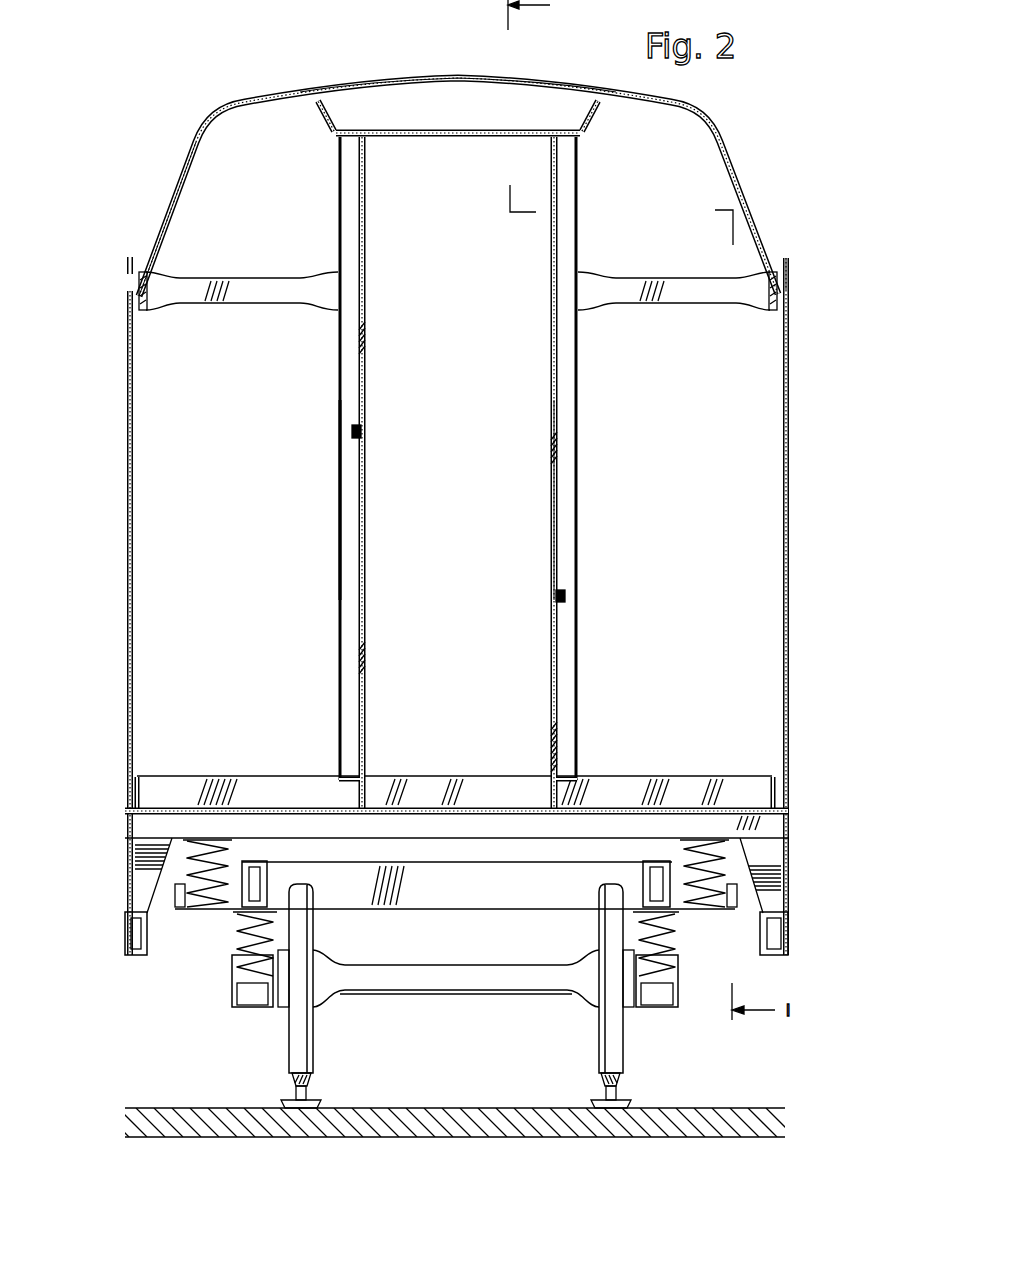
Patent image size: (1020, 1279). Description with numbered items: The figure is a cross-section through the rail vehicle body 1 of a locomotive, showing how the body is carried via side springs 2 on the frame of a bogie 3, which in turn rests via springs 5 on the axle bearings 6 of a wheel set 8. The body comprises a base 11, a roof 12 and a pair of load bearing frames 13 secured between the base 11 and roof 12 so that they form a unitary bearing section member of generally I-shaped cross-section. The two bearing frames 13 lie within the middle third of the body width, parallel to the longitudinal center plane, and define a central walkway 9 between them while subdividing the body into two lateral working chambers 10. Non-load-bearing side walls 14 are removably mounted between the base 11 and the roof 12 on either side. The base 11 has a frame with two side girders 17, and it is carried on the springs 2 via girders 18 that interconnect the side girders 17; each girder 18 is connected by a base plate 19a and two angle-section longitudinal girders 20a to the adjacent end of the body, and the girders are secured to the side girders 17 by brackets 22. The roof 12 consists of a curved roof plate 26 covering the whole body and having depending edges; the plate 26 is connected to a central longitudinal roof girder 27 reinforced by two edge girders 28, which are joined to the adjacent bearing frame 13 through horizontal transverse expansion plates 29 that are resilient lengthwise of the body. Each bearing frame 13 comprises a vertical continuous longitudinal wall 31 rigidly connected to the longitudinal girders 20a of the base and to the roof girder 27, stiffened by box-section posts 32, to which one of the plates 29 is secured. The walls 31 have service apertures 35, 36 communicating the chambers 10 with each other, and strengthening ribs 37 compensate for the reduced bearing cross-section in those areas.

The rail vehicle body 1 is at (356, 77).
The roof 12 is at (439, 76).
The roof plate 26 is at (484, 82).
The roof girder 27 is at (462, 137).
The longitudinal wall 31 is at (365, 236).
The transverse expansion plate 29 is at (239, 291).
The longitudinal edge girder 28 is at (127, 304).
The lateral working chamber 10 is at (243, 367).
The walkway 9 is at (463, 367).
The post 32 is at (338, 405).
The strengthening rib 37 is at (352, 432).
The service aperture 36 is at (357, 505).
The service aperture 35 is at (560, 501).
The load bearing frame 13 is at (543, 640).
The side wall 14 is at (133, 498).
The girder 18 is at (237, 793).
The longitudinal girder 20a is at (369, 801).
The base plate 19a is at (644, 810).
The bracket 22 is at (130, 878).
The side girder 17 is at (125, 924).
The side spring 2 is at (185, 906).
The spring 5 is at (244, 938).
The axle bearing 6 is at (236, 990).
The base 11 is at (462, 846).
The bogie 3 is at (530, 908).
The wheel set 8 is at (450, 986).